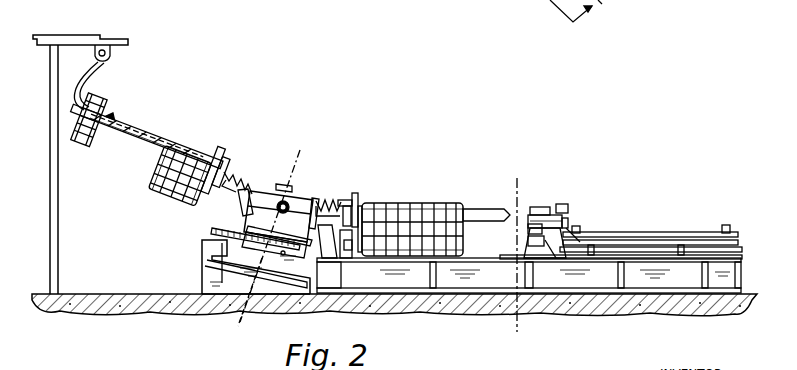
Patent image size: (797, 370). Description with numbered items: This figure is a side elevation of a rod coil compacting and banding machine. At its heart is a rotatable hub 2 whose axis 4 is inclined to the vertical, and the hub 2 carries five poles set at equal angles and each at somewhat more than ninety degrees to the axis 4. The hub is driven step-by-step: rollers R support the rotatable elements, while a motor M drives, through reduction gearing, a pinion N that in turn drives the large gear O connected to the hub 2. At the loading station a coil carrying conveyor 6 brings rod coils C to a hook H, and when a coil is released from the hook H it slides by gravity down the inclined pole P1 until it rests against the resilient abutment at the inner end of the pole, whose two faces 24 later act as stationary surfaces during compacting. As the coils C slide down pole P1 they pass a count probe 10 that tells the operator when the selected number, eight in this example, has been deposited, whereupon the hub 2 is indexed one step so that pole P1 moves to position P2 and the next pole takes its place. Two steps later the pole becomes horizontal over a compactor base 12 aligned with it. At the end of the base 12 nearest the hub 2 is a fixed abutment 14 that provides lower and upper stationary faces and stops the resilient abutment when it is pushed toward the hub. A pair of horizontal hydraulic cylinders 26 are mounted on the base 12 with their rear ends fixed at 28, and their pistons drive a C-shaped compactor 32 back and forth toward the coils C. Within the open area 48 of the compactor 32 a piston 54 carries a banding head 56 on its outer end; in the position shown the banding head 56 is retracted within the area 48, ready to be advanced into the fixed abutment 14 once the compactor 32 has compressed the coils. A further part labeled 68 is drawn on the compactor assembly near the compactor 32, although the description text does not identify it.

The coil carrying conveyor 6 is at (119, 38).
The hook H is at (86, 80).
The count probe 10 is at (148, 124).
The pole P1 is at (118, 137).
The rotatable hub 2 is at (260, 189).
The hub axis 4 is at (300, 152).
The pole position P2 is at (256, 223).
The pinion N is at (215, 231).
The motor M is at (220, 249).
The rollers R is at (242, 299).
The large gear O is at (283, 253).
The compactor base 12 is at (435, 298).
The fixed abutment 14 is at (350, 250).
The faces of resilient abutment 24 is at (360, 203).
The coils C is at (436, 211).
The banding head 56 is at (528, 227).
The open area 48 is at (530, 239).
The piston 54 is at (548, 247).
The compactor 32 is at (555, 216).
The clamp 68 is at (572, 219).
The horizontal hydraulic cylinders 26 is at (658, 231).
The rear end fixing 28 is at (727, 229).